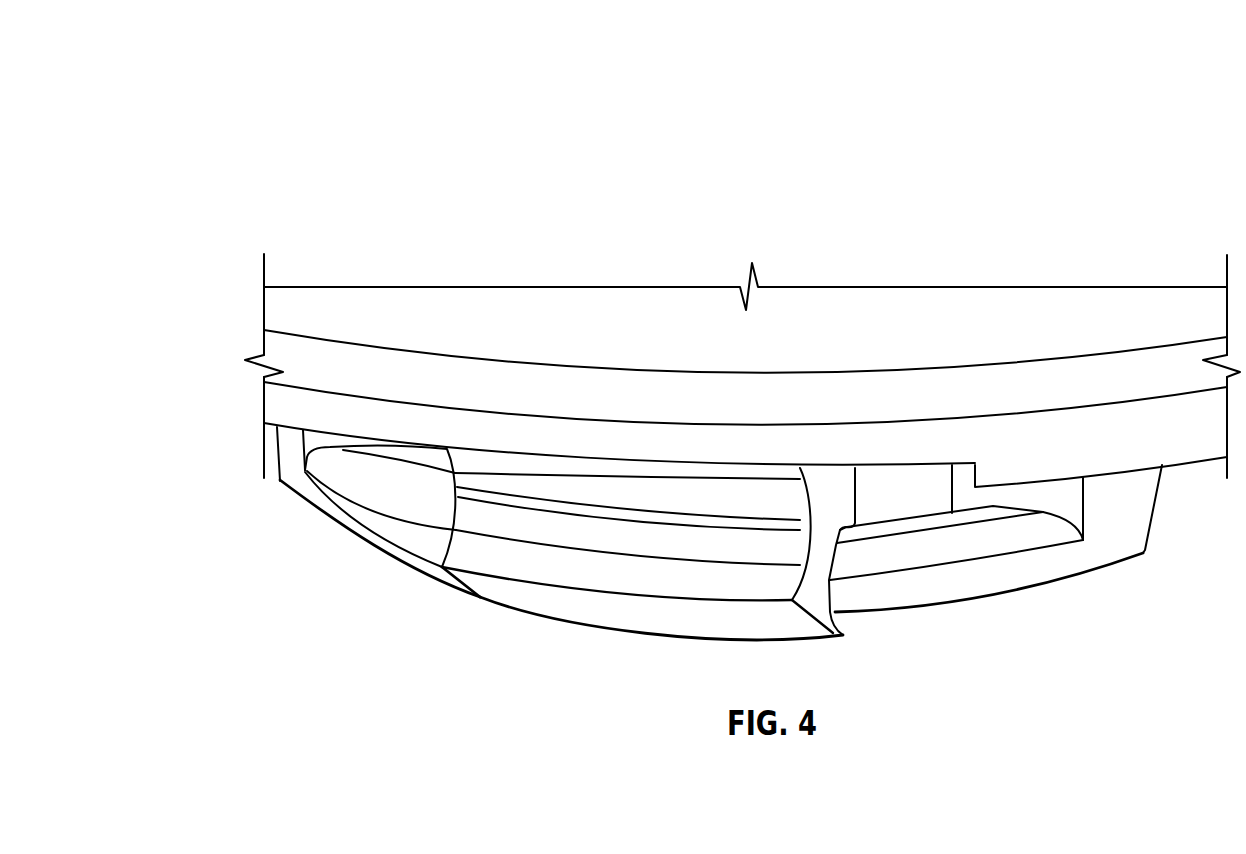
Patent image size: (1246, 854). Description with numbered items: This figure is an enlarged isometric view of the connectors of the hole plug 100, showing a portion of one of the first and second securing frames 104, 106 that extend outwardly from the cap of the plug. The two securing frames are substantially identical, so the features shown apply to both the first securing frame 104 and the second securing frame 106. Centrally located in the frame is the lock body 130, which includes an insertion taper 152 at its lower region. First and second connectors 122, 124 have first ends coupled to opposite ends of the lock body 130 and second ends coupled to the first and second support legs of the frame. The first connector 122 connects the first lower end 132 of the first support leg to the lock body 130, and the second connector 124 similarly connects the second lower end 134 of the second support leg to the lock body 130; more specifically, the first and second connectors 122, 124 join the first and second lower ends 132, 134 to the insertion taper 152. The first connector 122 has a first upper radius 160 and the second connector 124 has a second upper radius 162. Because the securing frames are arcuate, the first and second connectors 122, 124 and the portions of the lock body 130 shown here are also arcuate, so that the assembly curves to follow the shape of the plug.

The hole plug 100 is at (288, 103).
The first securing frame 104 is at (296, 446).
The second securing frame 106 is at (1143, 490).
The first connector 122 is at (360, 514).
The second connector 124 is at (958, 577).
The lock body 130 is at (705, 588).
The first lower end 132 is at (293, 460).
The second lower end 134 is at (1107, 533).
The insertion taper 152 is at (522, 589).
The first upper radius 160 is at (392, 500).
The second upper radius 162 is at (890, 557).